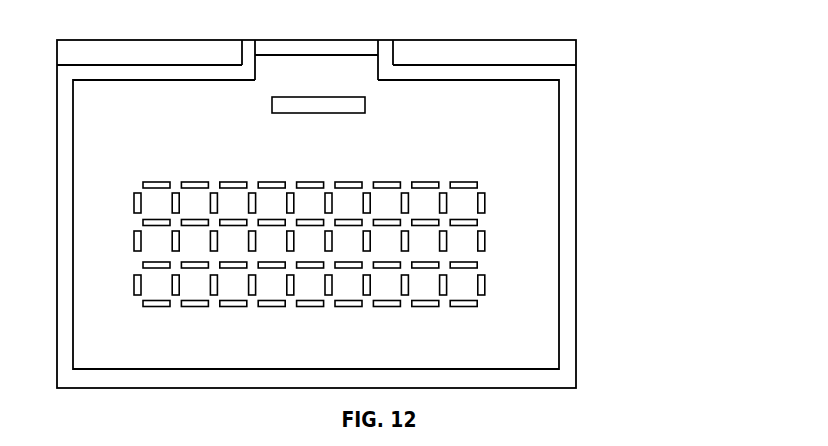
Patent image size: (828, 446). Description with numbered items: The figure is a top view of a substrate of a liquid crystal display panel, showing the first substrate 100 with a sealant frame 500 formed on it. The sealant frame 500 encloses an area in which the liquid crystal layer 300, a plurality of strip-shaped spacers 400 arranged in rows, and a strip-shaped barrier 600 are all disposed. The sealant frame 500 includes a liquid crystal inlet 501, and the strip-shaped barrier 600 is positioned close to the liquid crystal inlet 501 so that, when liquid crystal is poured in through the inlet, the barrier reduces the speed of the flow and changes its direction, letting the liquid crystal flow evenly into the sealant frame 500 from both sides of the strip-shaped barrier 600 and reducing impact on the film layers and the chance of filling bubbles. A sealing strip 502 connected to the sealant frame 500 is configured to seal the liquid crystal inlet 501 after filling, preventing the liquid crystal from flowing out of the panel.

The first substrate 100 is at (558, 46).
The liquid crystal layer 300 is at (532, 167).
The strip-shaped spacer 400 is at (488, 243).
The sealant frame 500 is at (566, 104).
The liquid crystal inlet 501 is at (360, 62).
The sealing strip 502 is at (275, 48).
The strip-shaped barrier 600 is at (332, 104).